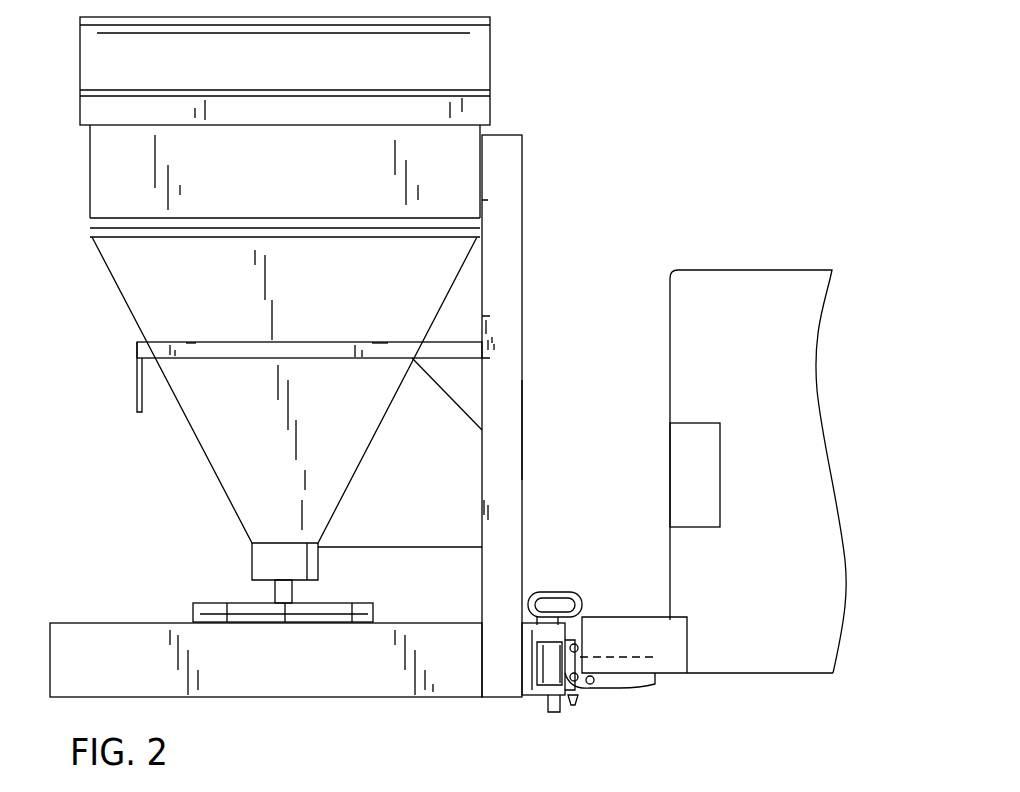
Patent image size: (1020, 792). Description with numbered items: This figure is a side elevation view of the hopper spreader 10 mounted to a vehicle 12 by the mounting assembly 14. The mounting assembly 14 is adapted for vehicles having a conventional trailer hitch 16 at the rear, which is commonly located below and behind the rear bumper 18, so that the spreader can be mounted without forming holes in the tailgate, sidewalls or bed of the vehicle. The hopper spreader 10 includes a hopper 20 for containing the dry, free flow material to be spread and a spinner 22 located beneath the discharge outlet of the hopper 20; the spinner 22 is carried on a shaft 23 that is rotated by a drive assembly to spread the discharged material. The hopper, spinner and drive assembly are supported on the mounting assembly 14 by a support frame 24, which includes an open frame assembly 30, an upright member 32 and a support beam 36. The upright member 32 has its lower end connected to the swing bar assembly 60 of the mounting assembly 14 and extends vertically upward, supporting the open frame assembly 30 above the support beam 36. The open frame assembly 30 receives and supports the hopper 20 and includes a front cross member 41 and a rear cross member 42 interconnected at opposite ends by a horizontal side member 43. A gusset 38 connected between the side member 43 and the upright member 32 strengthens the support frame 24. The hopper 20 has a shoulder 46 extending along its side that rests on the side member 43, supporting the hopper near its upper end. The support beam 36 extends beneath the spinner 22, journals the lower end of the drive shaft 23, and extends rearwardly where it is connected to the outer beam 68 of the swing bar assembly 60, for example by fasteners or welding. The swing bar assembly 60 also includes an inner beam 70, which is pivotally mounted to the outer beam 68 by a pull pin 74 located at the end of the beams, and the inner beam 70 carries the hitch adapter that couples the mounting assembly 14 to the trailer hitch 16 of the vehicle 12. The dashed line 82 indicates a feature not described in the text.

The hopper spreader 10 is at (123, 490).
The vehicle 12 is at (753, 287).
The mounting assembly 14 is at (610, 728).
The trailer hitch 16 is at (650, 652).
The rear bumper 18 is at (643, 617).
The hopper 20 is at (107, 167).
The spinner 22 is at (357, 605).
The shaft 23 is at (300, 592).
The support frame 24 is at (528, 228).
The open frame assembly 30 is at (305, 340).
The upright member 32 is at (522, 438).
The support beam 36 is at (342, 685).
The gussets 38 is at (453, 393).
The front cross member 41 is at (137, 388).
The rear cross member 42 is at (503, 347).
The side member 43 is at (380, 350).
The shoulder 46 is at (188, 345).
The swing bar assembly 60 is at (583, 700).
The outer beam 68 is at (530, 695).
The inner beam 70 is at (542, 688).
The pull pin 74 is at (552, 593).
The axis 82 is at (617, 657).